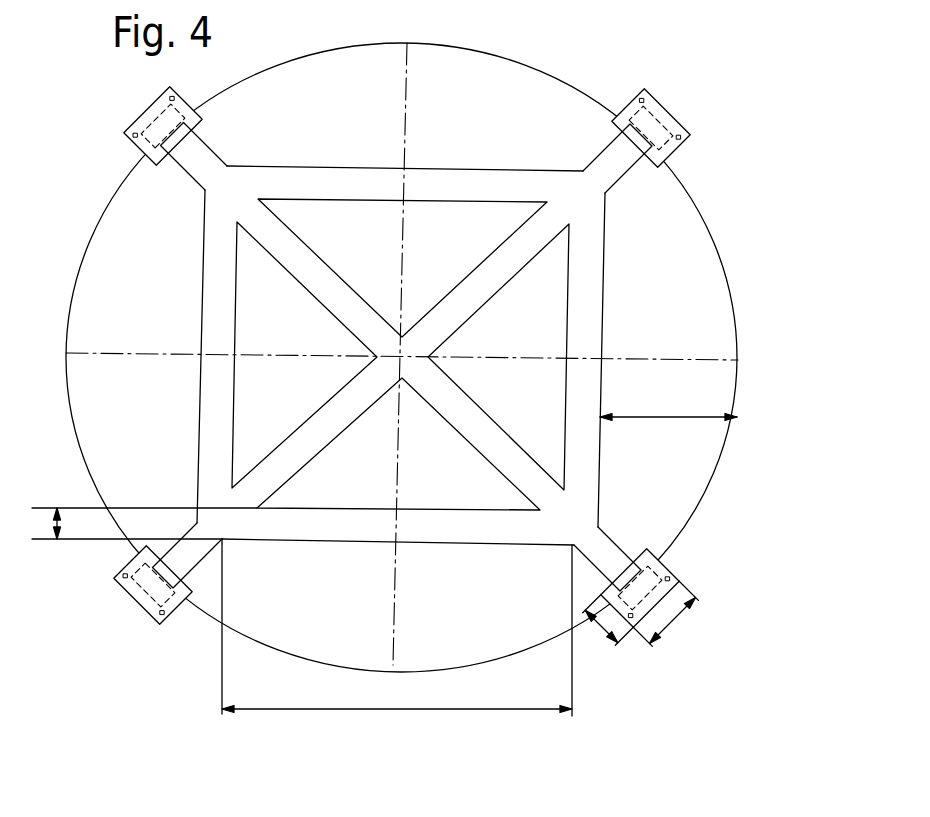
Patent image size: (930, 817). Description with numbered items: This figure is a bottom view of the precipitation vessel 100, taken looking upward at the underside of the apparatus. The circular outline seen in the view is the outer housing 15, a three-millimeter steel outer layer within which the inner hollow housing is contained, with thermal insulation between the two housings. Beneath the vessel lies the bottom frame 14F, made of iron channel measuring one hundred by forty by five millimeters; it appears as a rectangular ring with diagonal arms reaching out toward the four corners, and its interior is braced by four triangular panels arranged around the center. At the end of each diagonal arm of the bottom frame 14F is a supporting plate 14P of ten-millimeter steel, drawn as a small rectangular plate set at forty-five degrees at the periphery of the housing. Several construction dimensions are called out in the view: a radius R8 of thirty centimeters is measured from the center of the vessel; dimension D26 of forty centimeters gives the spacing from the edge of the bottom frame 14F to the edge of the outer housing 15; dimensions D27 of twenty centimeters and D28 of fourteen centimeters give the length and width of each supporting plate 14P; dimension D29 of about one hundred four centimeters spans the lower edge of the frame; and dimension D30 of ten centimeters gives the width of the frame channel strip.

The precipitation vessel 100 is at (420, 389).
The outer housing 15 is at (203, 613).
The bottom frame 14F is at (518, 252).
The supporting plate 14P is at (663, 565).
The radius R8 is at (427, 357).
The dimension D26 is at (699, 417).
The dimension D27 is at (668, 623).
The dimension D28 is at (584, 614).
The dimension D29 is at (457, 709).
The dimension D30 is at (57, 522).